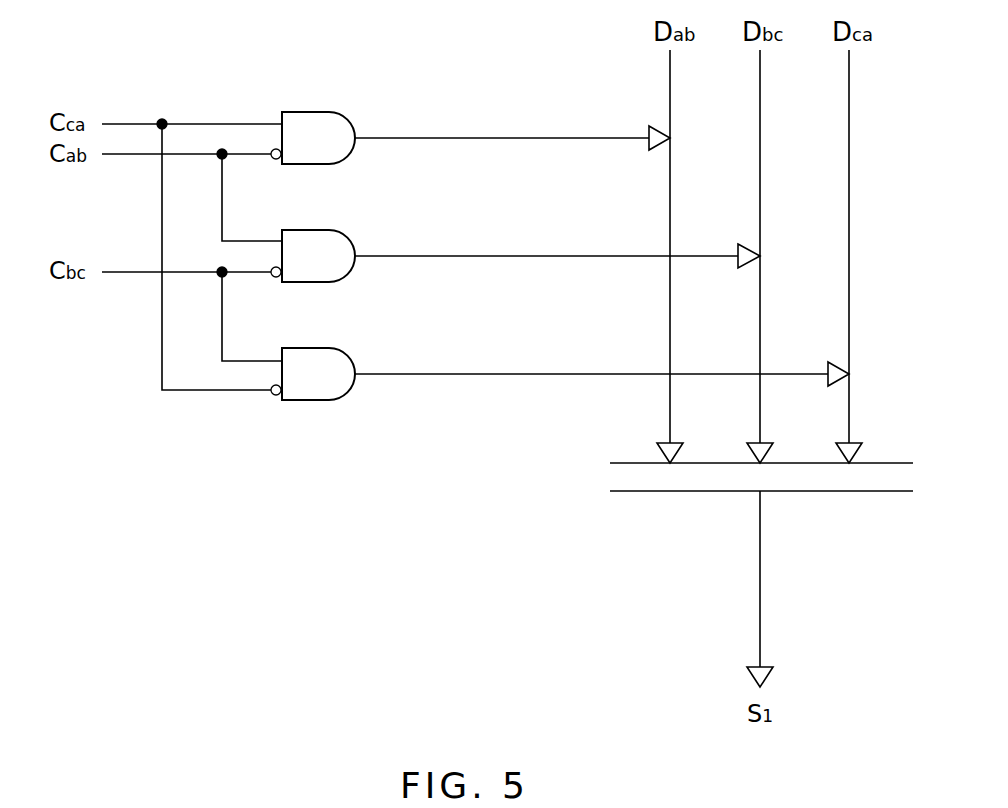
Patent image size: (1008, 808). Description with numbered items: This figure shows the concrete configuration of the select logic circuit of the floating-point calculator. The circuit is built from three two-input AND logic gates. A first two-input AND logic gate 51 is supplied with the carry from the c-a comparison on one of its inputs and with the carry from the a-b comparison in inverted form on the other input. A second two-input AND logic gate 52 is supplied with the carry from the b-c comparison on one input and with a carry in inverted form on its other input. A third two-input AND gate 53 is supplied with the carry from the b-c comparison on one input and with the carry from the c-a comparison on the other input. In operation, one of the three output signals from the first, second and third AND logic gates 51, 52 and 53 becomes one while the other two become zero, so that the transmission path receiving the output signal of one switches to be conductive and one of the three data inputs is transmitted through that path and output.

The first 2-input AND logic gate 51 is at (347, 118).
The second 2-input AND logic gate 52 is at (345, 232).
The third 2-input AND gate 53 is at (347, 353).